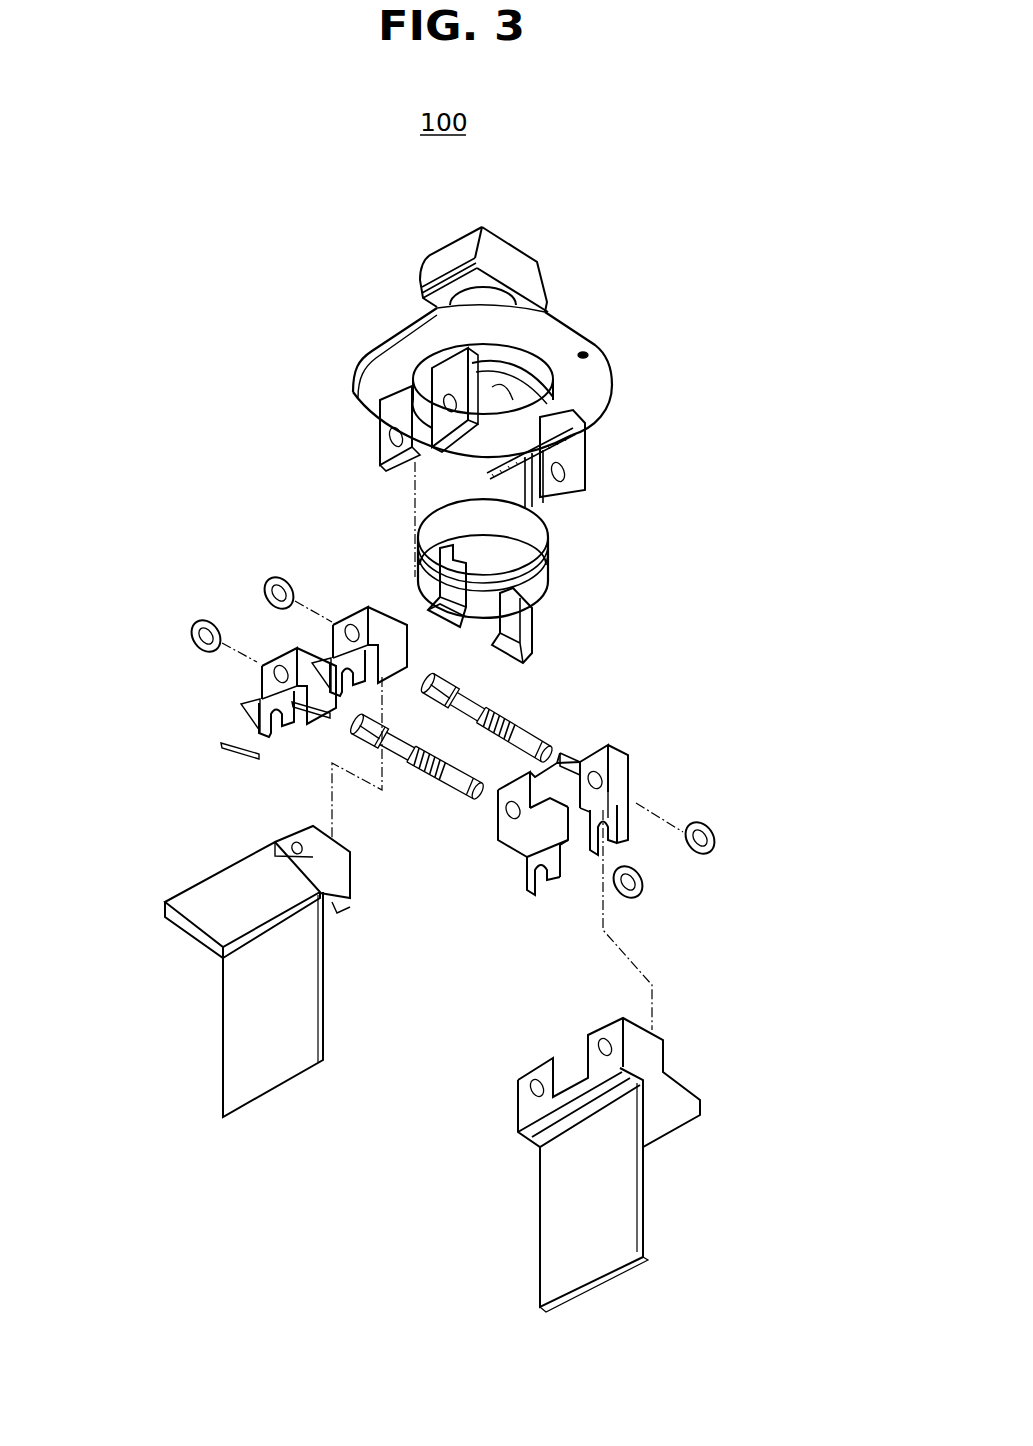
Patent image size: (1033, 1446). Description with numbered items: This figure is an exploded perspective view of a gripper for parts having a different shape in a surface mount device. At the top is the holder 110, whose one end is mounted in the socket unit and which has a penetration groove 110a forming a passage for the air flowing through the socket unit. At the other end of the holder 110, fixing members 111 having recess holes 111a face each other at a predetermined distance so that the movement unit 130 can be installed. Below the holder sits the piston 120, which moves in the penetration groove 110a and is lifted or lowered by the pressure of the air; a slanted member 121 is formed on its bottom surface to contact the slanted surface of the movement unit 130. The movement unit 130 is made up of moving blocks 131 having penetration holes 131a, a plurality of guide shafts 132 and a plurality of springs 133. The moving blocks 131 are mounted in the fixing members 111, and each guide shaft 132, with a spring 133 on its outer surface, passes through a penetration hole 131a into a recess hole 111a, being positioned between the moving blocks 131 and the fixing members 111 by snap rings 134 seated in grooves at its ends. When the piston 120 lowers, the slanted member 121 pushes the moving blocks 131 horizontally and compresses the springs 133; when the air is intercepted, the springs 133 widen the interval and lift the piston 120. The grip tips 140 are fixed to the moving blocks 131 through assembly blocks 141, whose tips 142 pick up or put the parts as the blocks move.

The holder 110 is at (545, 245).
The penetration groove 110a is at (520, 398).
The fixing member 111 is at (395, 410).
The recess hole 111a is at (585, 484).
The piston 120 is at (562, 568).
The slanted member 121 is at (440, 578).
The movement unit 130 is at (672, 781).
The moving block 131 is at (262, 725).
The penetration hole 131a is at (354, 617).
The guide shaft 132 is at (490, 793).
The spring 133 is at (450, 757).
The snap ring 134 is at (270, 578).
The grip tip 140 is at (206, 1068).
The assembly block 141 is at (300, 845).
The tip 142 is at (266, 1073).